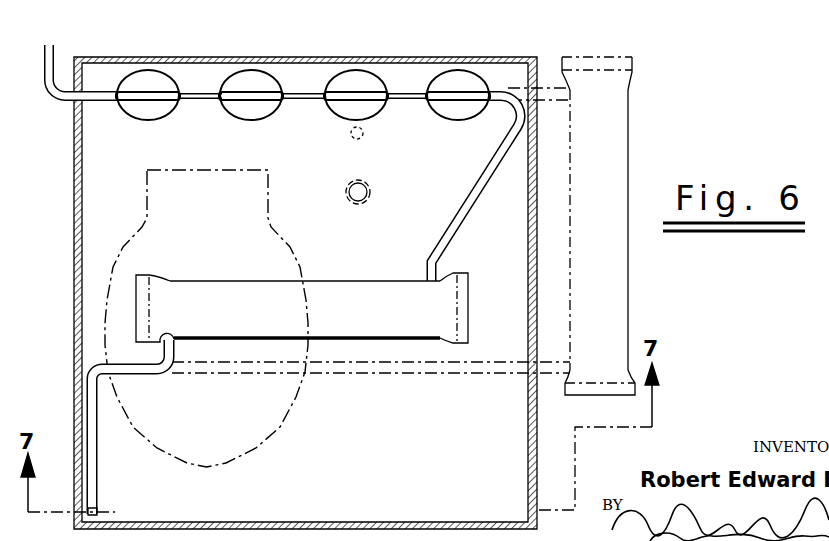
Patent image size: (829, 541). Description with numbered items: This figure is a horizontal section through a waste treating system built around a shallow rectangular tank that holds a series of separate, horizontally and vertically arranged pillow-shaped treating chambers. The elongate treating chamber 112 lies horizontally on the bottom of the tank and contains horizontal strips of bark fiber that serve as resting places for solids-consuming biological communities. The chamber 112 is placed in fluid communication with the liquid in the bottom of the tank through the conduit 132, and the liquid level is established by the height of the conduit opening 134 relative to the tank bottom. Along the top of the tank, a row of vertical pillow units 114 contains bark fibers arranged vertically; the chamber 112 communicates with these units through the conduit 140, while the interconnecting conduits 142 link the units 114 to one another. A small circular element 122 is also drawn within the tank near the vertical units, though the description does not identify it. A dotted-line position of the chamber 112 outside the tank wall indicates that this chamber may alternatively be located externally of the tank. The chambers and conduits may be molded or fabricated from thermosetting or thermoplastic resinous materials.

The treating chamber 112 is at (370, 322).
The vertical pillow units 114 is at (145, 108).
The stirring tube 122 is at (373, 187).
The conduit 132 is at (96, 408).
The conduit opening 134 is at (100, 505).
The conduit 140 is at (461, 213).
The interconnecting conduits 142 is at (185, 102).